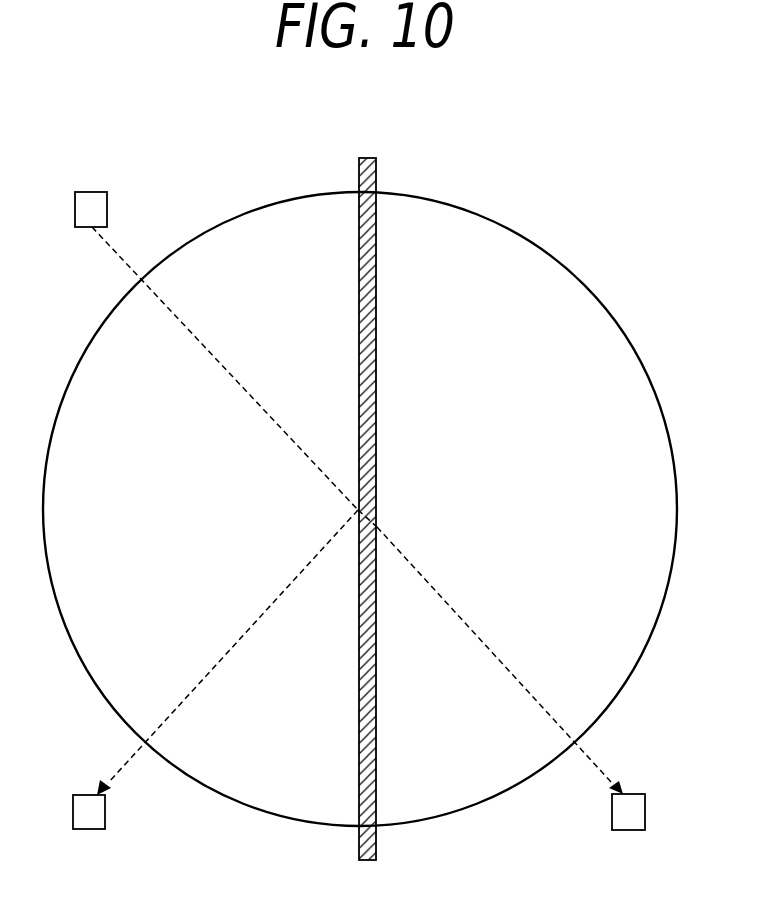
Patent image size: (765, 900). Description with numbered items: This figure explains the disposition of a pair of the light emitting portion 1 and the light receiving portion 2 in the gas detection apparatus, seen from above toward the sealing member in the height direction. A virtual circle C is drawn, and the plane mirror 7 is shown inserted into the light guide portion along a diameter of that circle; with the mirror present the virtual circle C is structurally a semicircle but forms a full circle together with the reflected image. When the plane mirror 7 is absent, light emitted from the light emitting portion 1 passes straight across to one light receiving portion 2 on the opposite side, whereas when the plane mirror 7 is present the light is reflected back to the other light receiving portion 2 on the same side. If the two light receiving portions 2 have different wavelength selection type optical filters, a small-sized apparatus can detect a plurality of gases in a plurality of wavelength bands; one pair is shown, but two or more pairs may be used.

The light emitting portion 1 is at (90, 192).
The light receiving portion 2 is at (88, 829).
The plane mirror 7 is at (377, 325).
The virtual circle C is at (250, 210).